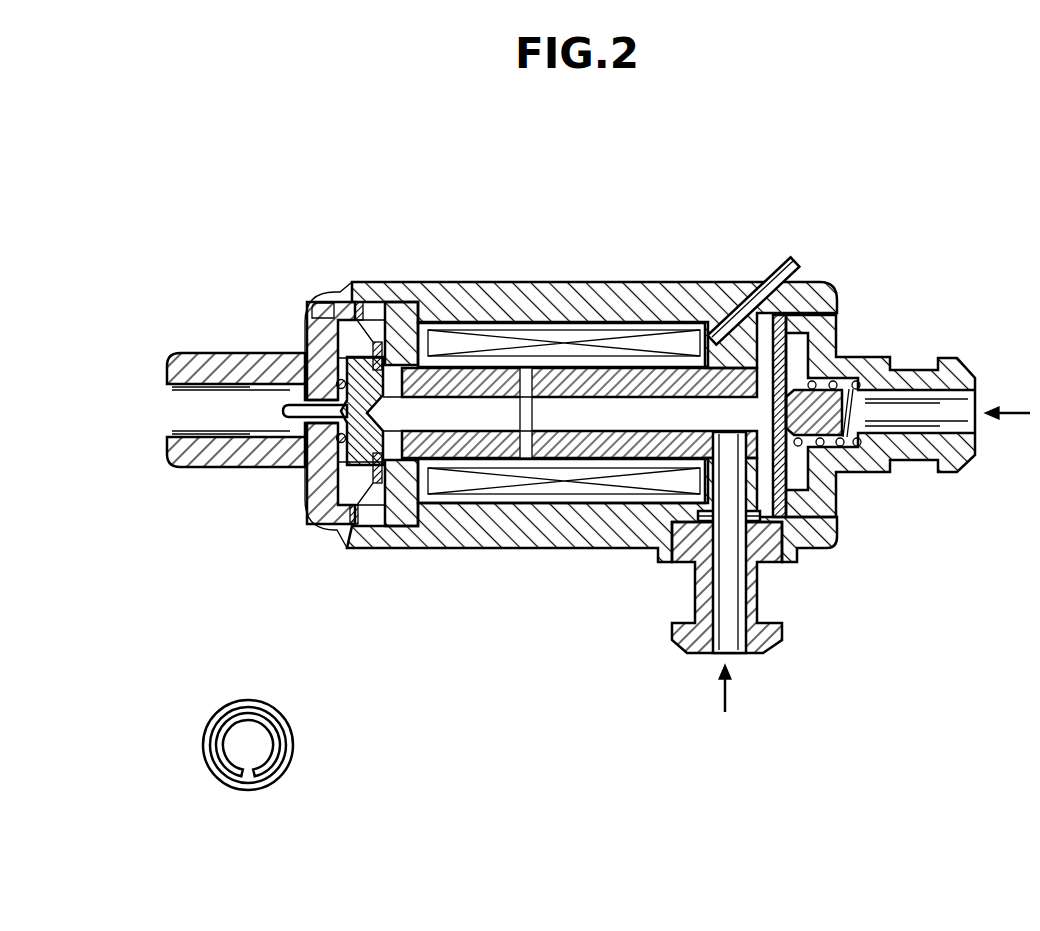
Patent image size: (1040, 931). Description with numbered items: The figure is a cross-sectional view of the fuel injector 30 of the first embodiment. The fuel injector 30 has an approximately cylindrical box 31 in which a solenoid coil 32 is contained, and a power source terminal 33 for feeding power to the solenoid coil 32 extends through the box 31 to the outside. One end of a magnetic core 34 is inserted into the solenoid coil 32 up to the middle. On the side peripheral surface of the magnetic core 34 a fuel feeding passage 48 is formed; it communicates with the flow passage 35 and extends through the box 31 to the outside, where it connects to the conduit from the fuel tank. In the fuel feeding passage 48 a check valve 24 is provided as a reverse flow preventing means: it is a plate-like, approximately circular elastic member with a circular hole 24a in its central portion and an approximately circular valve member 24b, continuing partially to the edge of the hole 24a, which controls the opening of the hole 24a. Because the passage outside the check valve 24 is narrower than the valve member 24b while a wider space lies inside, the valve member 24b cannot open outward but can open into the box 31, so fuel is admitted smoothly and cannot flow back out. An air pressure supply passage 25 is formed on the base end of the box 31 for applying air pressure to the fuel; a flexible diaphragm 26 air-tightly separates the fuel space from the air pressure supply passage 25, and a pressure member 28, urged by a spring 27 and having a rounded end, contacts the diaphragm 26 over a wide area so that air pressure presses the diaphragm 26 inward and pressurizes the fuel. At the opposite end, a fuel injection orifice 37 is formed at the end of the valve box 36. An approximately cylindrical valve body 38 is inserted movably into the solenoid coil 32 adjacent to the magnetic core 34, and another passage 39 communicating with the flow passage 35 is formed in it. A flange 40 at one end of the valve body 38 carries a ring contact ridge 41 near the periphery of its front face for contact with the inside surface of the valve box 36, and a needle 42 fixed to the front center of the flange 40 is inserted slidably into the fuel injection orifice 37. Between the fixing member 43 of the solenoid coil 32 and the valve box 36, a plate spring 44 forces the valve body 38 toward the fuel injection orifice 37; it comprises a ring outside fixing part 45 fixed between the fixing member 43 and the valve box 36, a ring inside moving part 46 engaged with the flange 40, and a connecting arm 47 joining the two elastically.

The fuel injector 30 is at (553, 244).
The box 31 is at (500, 282).
The solenoid coil 32 is at (645, 330).
The power source terminal 33 is at (785, 268).
The diaphragm 26 is at (836, 342).
The spring 27 is at (788, 352).
The pressure member 28 is at (850, 418).
The air pressure supply passage 25 is at (917, 400).
The valve box 36 is at (330, 300).
The fixing member 43 is at (400, 320).
The fuel injection orifice 37 is at (313, 400).
The needle 42 is at (166, 403).
The ring contact ridge 41 is at (320, 445).
The flange 40 is at (360, 452).
The ring outside fixing part 45 is at (347, 547).
The connecting arm 47 is at (372, 530).
The ring inside moving part 46 is at (405, 530).
The plate spring 44 is at (440, 603).
The valve body 38 is at (477, 447).
The passage 39 is at (505, 417).
The magnetic core 34 is at (573, 452).
The flow passage 35 is at (617, 420).
The check valve 24 is at (705, 580).
The fuel feeding passage 48 is at (732, 490).
The circular hole 24a is at (270, 717).
The valve member 24b is at (258, 750).